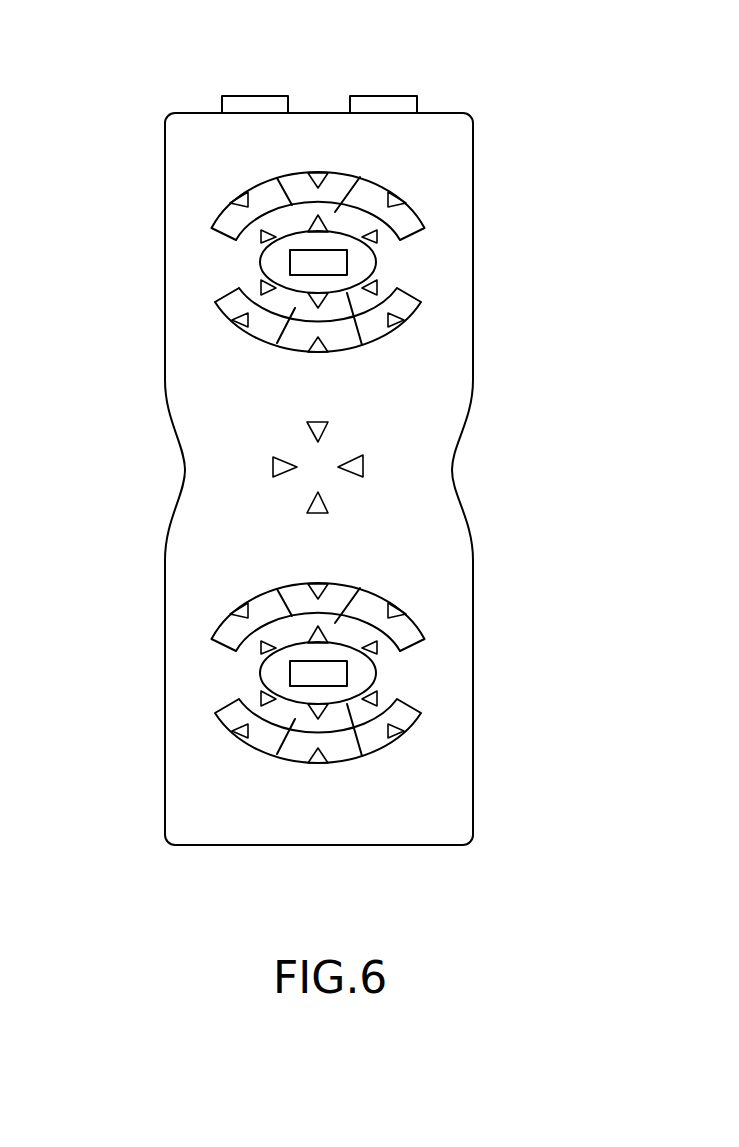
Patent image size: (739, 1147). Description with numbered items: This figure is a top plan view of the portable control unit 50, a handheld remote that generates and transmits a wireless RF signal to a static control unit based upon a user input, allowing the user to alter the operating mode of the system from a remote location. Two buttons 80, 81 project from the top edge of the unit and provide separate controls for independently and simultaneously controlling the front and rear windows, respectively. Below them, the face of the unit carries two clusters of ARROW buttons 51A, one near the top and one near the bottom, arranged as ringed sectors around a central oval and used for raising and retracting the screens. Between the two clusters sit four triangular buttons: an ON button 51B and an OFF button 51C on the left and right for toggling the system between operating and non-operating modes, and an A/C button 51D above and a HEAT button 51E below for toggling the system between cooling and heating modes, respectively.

The portable control unit 50 is at (135, 65).
The button 80 is at (257, 96).
The button 81 is at (388, 96).
The ARROW buttons 51A is at (343, 200).
The ON button 51B is at (283, 476).
The OFF button 51C is at (363, 472).
The A/C button 51D is at (326, 432).
The HEAT button 51E is at (328, 507).